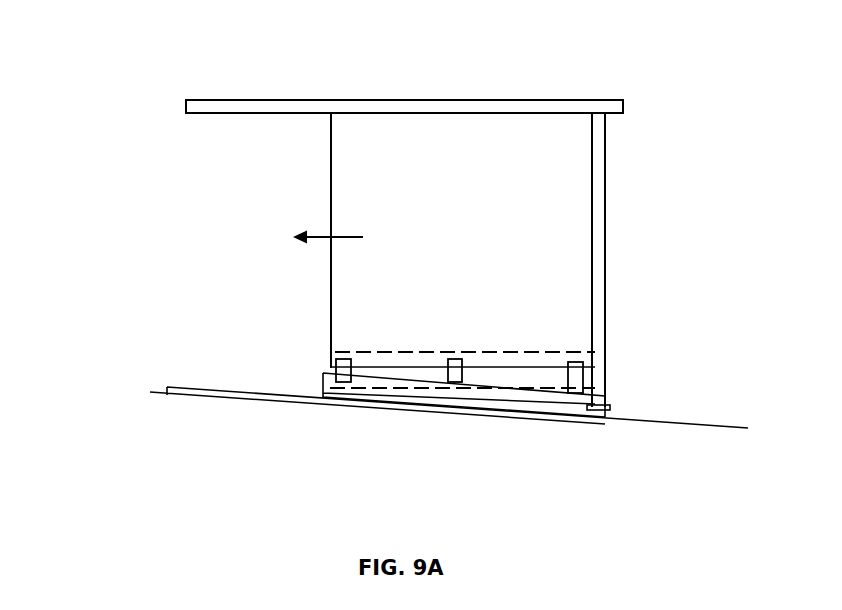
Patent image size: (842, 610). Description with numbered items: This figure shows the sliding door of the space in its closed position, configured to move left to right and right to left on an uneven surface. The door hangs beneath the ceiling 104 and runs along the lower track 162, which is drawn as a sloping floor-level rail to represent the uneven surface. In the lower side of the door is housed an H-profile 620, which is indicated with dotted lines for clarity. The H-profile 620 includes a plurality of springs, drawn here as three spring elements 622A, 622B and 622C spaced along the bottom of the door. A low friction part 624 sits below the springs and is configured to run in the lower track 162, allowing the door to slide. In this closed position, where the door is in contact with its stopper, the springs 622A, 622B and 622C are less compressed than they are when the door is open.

The ceiling 104 is at (186, 100).
The lower track 162 is at (165, 387).
The H-profile 620 is at (540, 350).
The spring 622A is at (352, 383).
The spring 622B is at (456, 383).
The spring 622C is at (580, 394).
The low friction part 624 is at (606, 395).